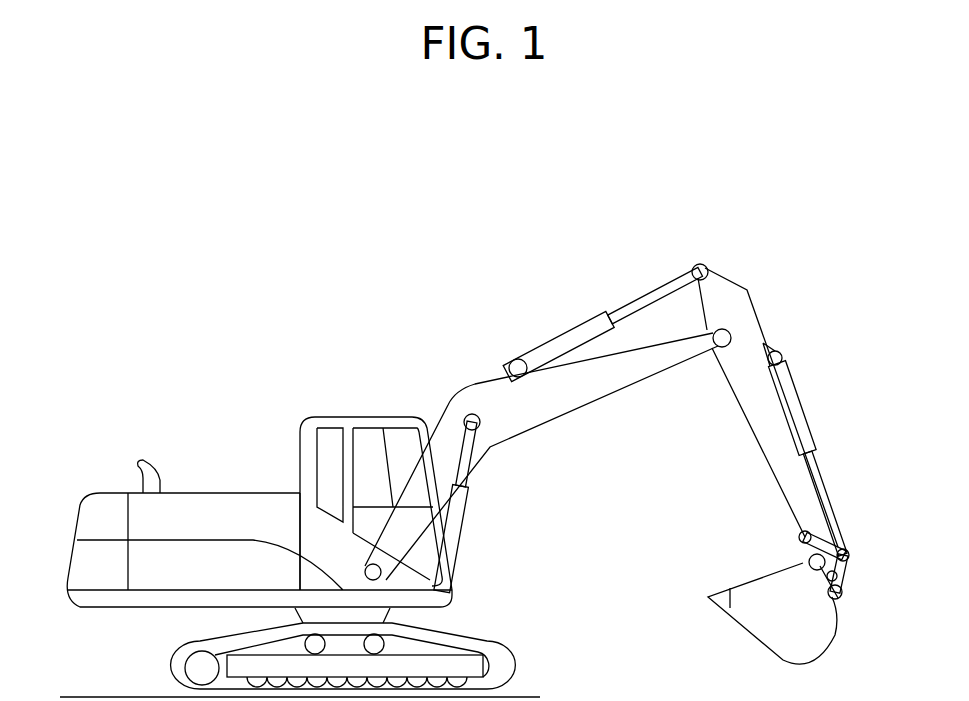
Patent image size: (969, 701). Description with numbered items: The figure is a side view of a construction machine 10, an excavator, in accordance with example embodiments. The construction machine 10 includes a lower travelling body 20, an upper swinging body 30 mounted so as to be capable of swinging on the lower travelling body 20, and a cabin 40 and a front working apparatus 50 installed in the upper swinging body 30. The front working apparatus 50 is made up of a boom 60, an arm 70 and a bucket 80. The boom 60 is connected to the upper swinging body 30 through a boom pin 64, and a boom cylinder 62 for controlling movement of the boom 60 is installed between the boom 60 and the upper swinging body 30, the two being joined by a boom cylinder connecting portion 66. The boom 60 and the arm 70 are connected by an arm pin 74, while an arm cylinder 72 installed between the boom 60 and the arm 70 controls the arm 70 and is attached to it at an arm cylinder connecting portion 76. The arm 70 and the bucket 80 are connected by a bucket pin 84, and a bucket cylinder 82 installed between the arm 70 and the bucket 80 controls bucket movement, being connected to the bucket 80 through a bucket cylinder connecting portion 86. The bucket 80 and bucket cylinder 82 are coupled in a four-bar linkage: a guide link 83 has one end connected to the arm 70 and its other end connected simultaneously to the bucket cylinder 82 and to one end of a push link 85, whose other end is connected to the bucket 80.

The construction machine 10 is at (438, 219).
The lower travelling body 20 is at (176, 660).
The upper swinging body 30 is at (66, 552).
The cabin 40 is at (327, 417).
The front working apparatus 50 is at (575, 308).
The boom 60 is at (483, 395).
The boom cylinder 62 is at (462, 504).
The boom pin 64 is at (383, 578).
The boom cylinder connecting portion 66 is at (482, 428).
The arm 70 is at (772, 458).
The arm cylinder 72 is at (545, 338).
The arm pin 74 is at (716, 350).
The arm cylinder connecting portion 76 is at (702, 263).
The bucket 80 is at (766, 586).
The bucket cylinder 82 is at (798, 405).
The guide link 83 is at (830, 541).
The bucket pin 84 is at (850, 560).
The push link 85 is at (846, 578).
The bucket cylinder connecting portion 86 is at (843, 600).